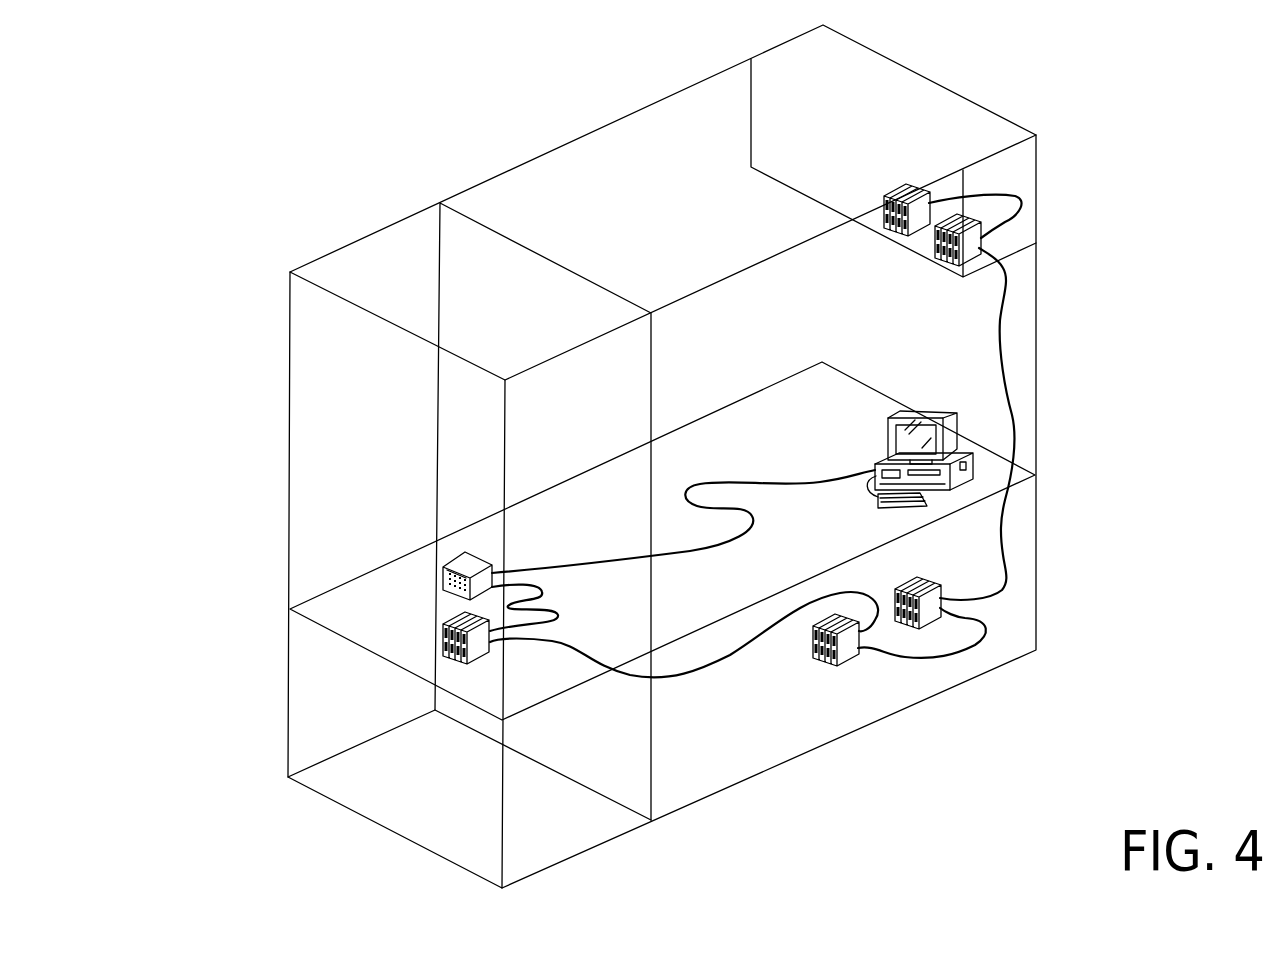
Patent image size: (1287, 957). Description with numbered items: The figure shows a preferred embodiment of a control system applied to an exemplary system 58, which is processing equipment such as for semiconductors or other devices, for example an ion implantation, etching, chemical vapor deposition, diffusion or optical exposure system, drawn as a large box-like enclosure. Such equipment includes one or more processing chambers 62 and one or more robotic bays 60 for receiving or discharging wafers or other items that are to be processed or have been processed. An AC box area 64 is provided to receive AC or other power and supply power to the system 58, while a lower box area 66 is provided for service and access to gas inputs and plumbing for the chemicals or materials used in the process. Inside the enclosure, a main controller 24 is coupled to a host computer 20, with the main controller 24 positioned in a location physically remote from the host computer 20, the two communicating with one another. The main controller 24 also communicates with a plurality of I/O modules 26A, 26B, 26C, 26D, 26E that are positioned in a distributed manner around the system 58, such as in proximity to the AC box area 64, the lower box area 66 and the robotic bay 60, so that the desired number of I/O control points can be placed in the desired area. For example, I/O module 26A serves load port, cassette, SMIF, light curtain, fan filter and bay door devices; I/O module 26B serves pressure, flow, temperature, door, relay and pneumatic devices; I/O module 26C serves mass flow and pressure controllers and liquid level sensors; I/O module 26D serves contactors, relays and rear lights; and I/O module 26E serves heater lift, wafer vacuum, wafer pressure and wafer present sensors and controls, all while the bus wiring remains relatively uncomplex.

The system 58 is at (188, 748).
The robotic bay 60 is at (302, 415).
The processing chamber 62 is at (583, 162).
The AC box area 64 is at (943, 113).
The lower box area 66 is at (737, 753).
The host computer 20 is at (885, 438).
The main controller 24 is at (455, 552).
The I/O module 26A is at (443, 622).
The I/O module 26B is at (843, 662).
The I/O module 26C is at (902, 577).
The I/O module 26D is at (942, 255).
The I/O module 26E is at (884, 216).